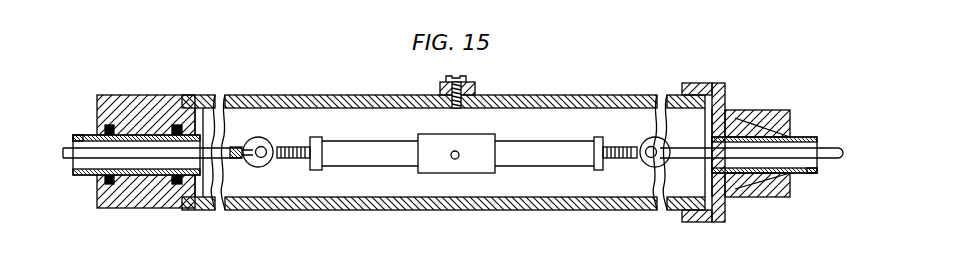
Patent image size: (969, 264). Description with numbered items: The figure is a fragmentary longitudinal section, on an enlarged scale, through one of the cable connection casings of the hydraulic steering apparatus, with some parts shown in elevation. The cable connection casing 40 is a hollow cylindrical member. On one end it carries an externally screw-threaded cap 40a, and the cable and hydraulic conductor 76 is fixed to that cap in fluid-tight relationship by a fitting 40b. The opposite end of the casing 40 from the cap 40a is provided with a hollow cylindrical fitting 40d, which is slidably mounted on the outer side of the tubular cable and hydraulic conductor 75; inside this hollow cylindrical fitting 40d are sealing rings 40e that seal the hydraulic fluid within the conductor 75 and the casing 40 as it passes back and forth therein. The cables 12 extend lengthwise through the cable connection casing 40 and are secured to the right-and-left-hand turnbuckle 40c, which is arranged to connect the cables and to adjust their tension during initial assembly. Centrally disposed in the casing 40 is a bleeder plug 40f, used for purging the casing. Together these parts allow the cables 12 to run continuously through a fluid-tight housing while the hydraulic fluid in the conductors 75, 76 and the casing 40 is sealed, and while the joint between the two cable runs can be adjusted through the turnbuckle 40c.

The cables 12 is at (87, 175).
The cable connection casing 40 is at (556, 95).
The externally screw-threaded cap 40a is at (728, 88).
The fitting 40b is at (786, 109).
The right-and-left-hand turnbuckle 40c is at (503, 160).
The hollow cylindrical fitting 40d is at (140, 107).
The sealing rings 40e is at (118, 180).
The bleeder plug 40f is at (440, 91).
The tubular cable and hydraulic conductor 75 is at (80, 134).
The cable and hydraulic conductor 76 is at (815, 176).